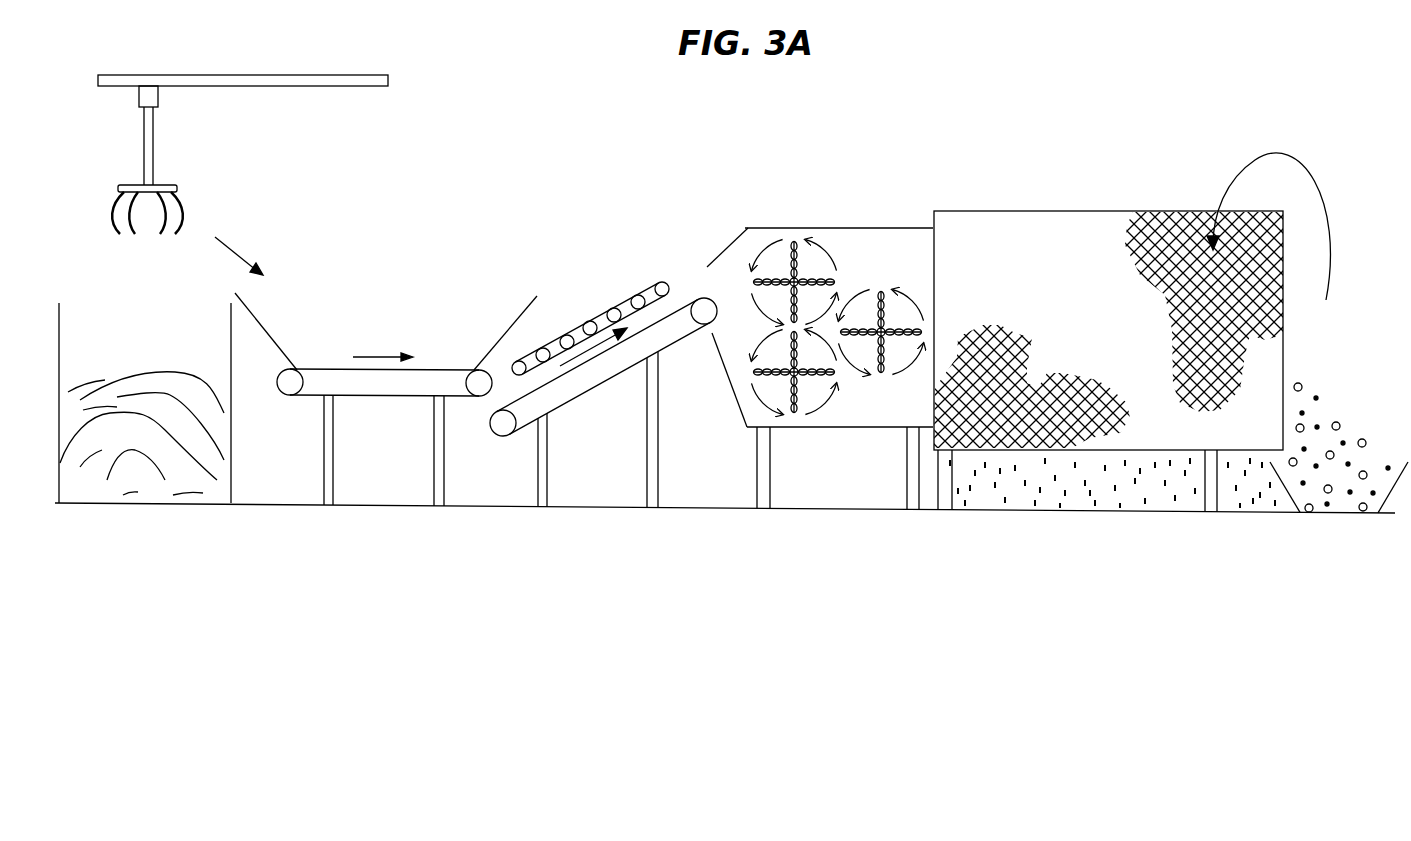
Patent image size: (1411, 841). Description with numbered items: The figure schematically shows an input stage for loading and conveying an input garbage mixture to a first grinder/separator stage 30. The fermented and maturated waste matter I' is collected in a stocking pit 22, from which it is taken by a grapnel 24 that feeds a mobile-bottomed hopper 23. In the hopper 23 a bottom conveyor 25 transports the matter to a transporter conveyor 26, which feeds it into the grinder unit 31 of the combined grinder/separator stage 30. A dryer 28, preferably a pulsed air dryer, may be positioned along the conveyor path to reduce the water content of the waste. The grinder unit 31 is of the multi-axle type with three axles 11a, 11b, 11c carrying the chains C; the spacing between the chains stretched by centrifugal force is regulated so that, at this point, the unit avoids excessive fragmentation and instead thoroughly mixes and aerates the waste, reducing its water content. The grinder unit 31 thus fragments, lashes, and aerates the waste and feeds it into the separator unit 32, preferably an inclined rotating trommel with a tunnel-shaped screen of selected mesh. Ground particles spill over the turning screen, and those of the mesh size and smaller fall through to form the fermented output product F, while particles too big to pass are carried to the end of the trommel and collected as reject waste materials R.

The stocking pit 22 is at (145, 505).
The mobile-bottomed hopper 23 is at (287, 331).
The grapnel 24 is at (180, 210).
The bottom conveyor 25 is at (383, 397).
The transporter conveyor 26 is at (603, 382).
The dryer 28 is at (623, 300).
The first grinder/separator stage 30 is at (1001, 179).
The grinder unit 31 is at (825, 197).
The separator unit 32 is at (1083, 294).
The axle 11a is at (790, 280).
The axle 11b is at (882, 330).
The axle 11c is at (794, 374).
The chains C is at (826, 262).
The fermented and maturated waste matter I' is at (142, 399).
The fermented output product F is at (1123, 497).
The reject waste materials R is at (1343, 395).